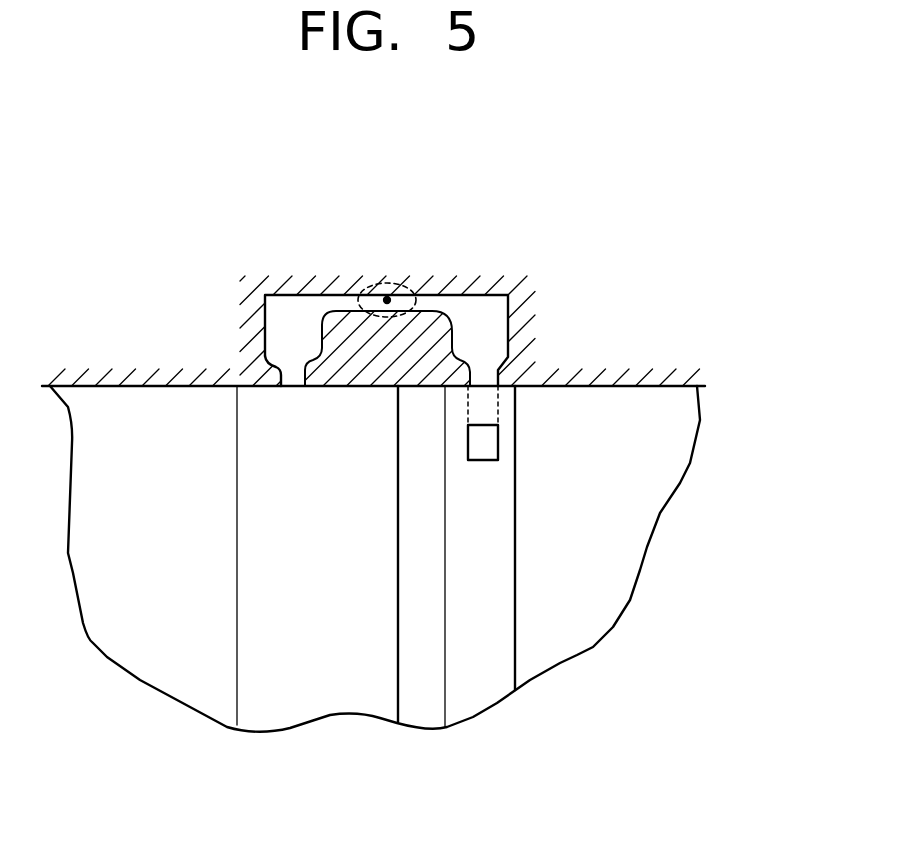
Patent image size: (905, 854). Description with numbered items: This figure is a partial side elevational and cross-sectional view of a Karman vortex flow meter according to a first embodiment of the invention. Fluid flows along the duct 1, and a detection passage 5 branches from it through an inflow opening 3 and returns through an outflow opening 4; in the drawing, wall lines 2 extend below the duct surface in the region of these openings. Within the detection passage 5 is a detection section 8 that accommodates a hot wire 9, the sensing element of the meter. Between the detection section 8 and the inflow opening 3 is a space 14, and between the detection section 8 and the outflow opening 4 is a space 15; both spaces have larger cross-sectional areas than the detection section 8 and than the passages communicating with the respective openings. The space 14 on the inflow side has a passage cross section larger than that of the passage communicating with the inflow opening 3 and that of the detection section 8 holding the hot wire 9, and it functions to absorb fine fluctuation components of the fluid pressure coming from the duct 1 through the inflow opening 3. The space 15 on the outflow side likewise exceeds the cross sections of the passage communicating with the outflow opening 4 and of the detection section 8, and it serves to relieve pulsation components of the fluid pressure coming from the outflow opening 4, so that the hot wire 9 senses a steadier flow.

The duct 1 is at (83, 388).
The wall lines 2 is at (403, 671).
The inflow opening 3 is at (278, 391).
The outflow opening 4 is at (503, 449).
The detection passage 5 is at (332, 295).
The detection section 8 is at (412, 288).
The hot wire 9 is at (387, 298).
The space 14 is at (295, 328).
The space 15 is at (472, 326).